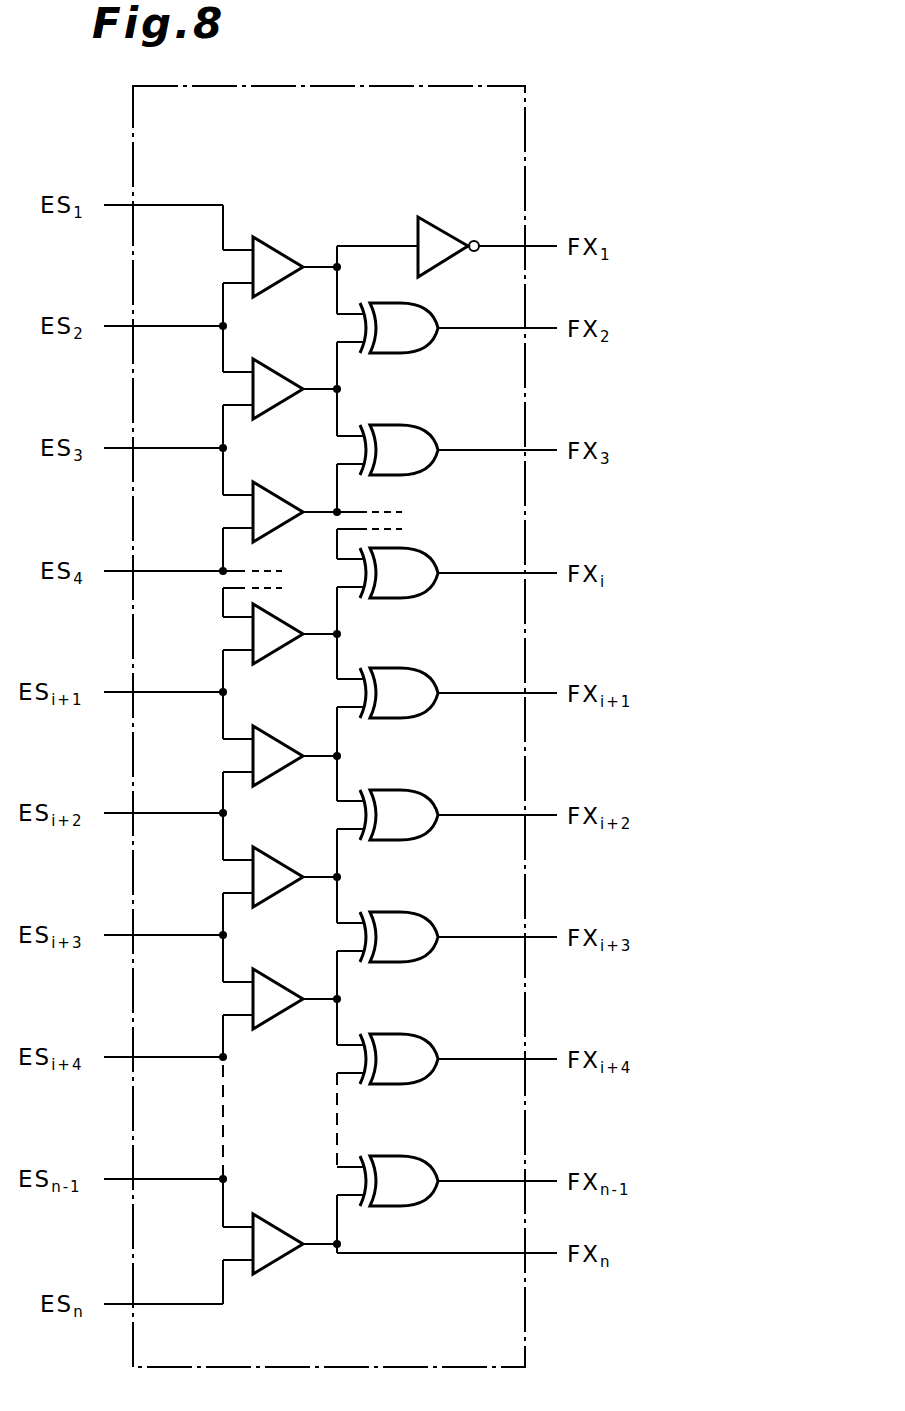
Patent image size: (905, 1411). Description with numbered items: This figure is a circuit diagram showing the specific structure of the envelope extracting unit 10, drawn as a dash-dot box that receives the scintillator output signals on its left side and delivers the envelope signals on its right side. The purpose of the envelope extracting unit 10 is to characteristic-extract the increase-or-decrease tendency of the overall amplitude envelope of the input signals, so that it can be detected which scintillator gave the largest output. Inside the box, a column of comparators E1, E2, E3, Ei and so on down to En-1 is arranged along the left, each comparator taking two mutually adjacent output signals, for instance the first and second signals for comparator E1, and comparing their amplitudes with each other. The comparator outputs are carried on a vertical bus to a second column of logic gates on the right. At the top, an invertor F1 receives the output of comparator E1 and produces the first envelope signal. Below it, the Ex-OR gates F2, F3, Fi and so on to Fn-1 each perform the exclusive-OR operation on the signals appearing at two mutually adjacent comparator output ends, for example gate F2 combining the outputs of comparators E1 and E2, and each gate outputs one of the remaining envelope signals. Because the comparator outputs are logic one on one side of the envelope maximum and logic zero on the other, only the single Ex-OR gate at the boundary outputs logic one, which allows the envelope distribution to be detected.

The envelope extracting unit 10 is at (448, 85).
The comparator E1 is at (282, 254).
The comparator E2 is at (282, 376).
The comparator E3 is at (282, 499).
The comparator Ei is at (282, 621).
The comparator En-1 is at (282, 1231).
The invertor F1 is at (445, 232).
The Ex-OR gate F2 is at (418, 302).
The Ex-OR gate F3 is at (418, 424).
The Ex-OR gate Fi is at (418, 547).
The Ex-OR gate Fn-1 is at (418, 1155).